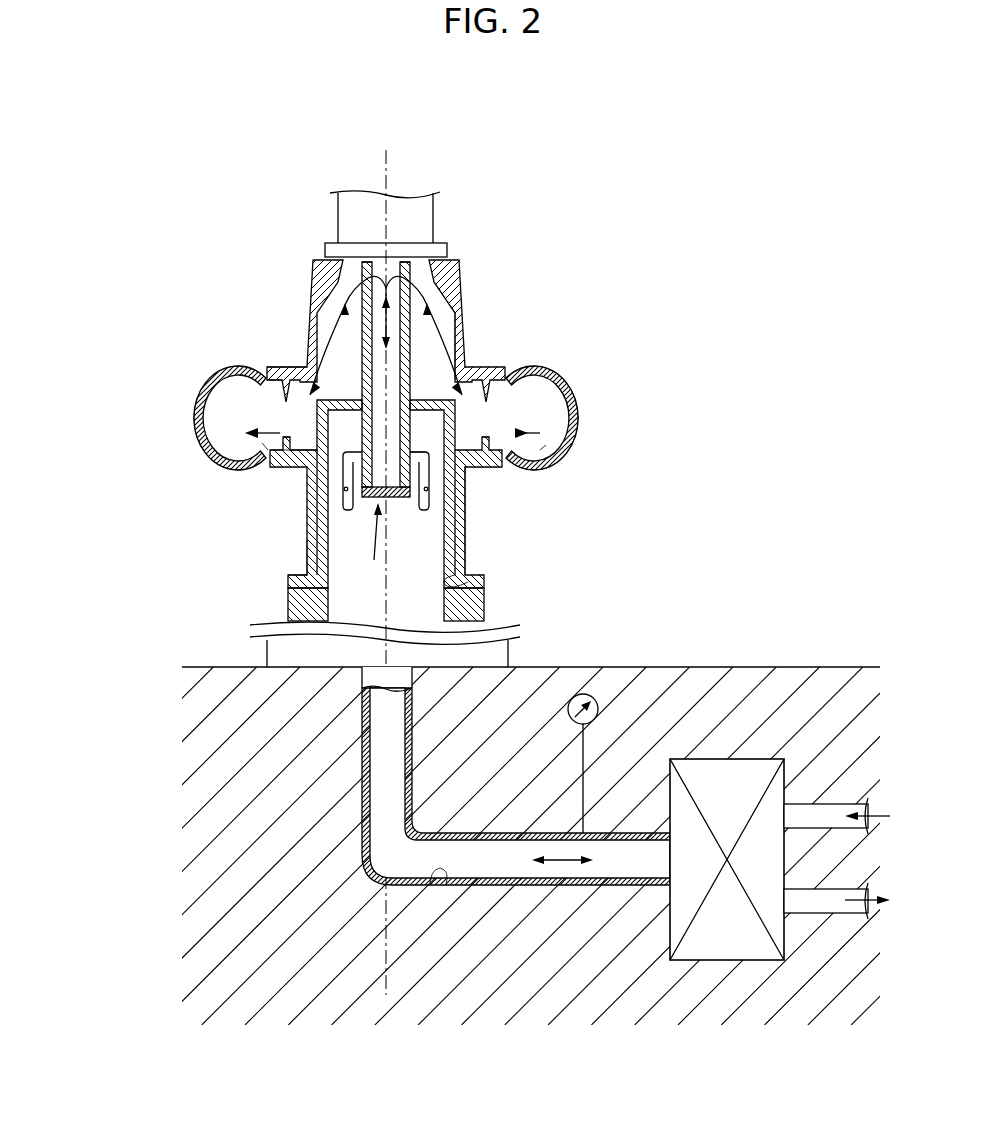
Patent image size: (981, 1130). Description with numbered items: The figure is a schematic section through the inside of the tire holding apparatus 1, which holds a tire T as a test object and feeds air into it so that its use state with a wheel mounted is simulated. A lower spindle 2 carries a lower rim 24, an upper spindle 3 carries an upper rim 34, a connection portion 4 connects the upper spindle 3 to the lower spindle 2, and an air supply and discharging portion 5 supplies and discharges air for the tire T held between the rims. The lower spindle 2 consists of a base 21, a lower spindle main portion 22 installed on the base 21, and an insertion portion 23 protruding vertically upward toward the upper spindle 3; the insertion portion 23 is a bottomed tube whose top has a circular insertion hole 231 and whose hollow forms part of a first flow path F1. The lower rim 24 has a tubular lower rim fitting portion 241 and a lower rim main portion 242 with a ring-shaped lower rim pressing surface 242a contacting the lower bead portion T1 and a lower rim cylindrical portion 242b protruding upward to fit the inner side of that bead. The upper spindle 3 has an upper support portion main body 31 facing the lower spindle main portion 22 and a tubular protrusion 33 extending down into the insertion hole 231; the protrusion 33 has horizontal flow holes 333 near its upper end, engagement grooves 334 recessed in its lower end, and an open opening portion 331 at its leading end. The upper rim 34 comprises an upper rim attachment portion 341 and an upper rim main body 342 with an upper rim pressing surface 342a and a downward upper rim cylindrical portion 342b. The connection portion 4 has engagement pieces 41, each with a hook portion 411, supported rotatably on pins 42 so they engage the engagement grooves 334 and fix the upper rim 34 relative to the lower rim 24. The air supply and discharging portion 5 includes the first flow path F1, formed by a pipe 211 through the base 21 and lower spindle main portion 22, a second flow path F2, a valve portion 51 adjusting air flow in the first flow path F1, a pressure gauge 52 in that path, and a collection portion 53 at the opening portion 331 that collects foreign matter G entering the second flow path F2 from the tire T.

The tire holding apparatus 1 is at (709, 185).
The lower spindle 2 is at (414, 489).
The upper spindle 3 is at (429, 315).
The connection portion 4 is at (322, 508).
The air supply and discharging portion 5 is at (780, 844).
The base 21 is at (222, 666).
The lower spindle main portion 22 is at (488, 608).
The insertion portion 23 is at (270, 458).
The lower rim 24 is at (470, 525).
The upper support portion main body 31 is at (425, 212).
The protrusion 33 is at (416, 358).
The upper rim 34 is at (455, 300).
The engagement pieces 41 is at (432, 470).
The pins 42 is at (318, 545).
The valve portion 51 is at (728, 790).
The pressure gauge 52 is at (592, 695).
The collection portion 53 is at (357, 557).
The pipe 211 is at (560, 886).
The insertion hole 231 is at (300, 372).
The lower rim fitting portion 241 is at (305, 572).
The lower rim main portion 242 is at (633, 423).
The lower rim pressing surface 242a is at (537, 456).
The lower rim cylindrical portion 242b is at (576, 418).
The opening portion 331 is at (398, 490).
The flow holes 333 is at (362, 278).
The engagement grooves 334 is at (457, 325).
The upper rim attachment portion 341 is at (442, 305).
The upper rim main body 342 is at (165, 418).
The upper rim pressing surface 342a is at (258, 376).
The upper rim cylindrical portion 342b is at (266, 416).
The hook portion 411 is at (422, 440).
The first flow path F1 is at (437, 886).
The second flow path F2 is at (370, 313).
The foreign matter G is at (262, 443).
The tire T is at (557, 415).
The bead portion T1 is at (286, 447).